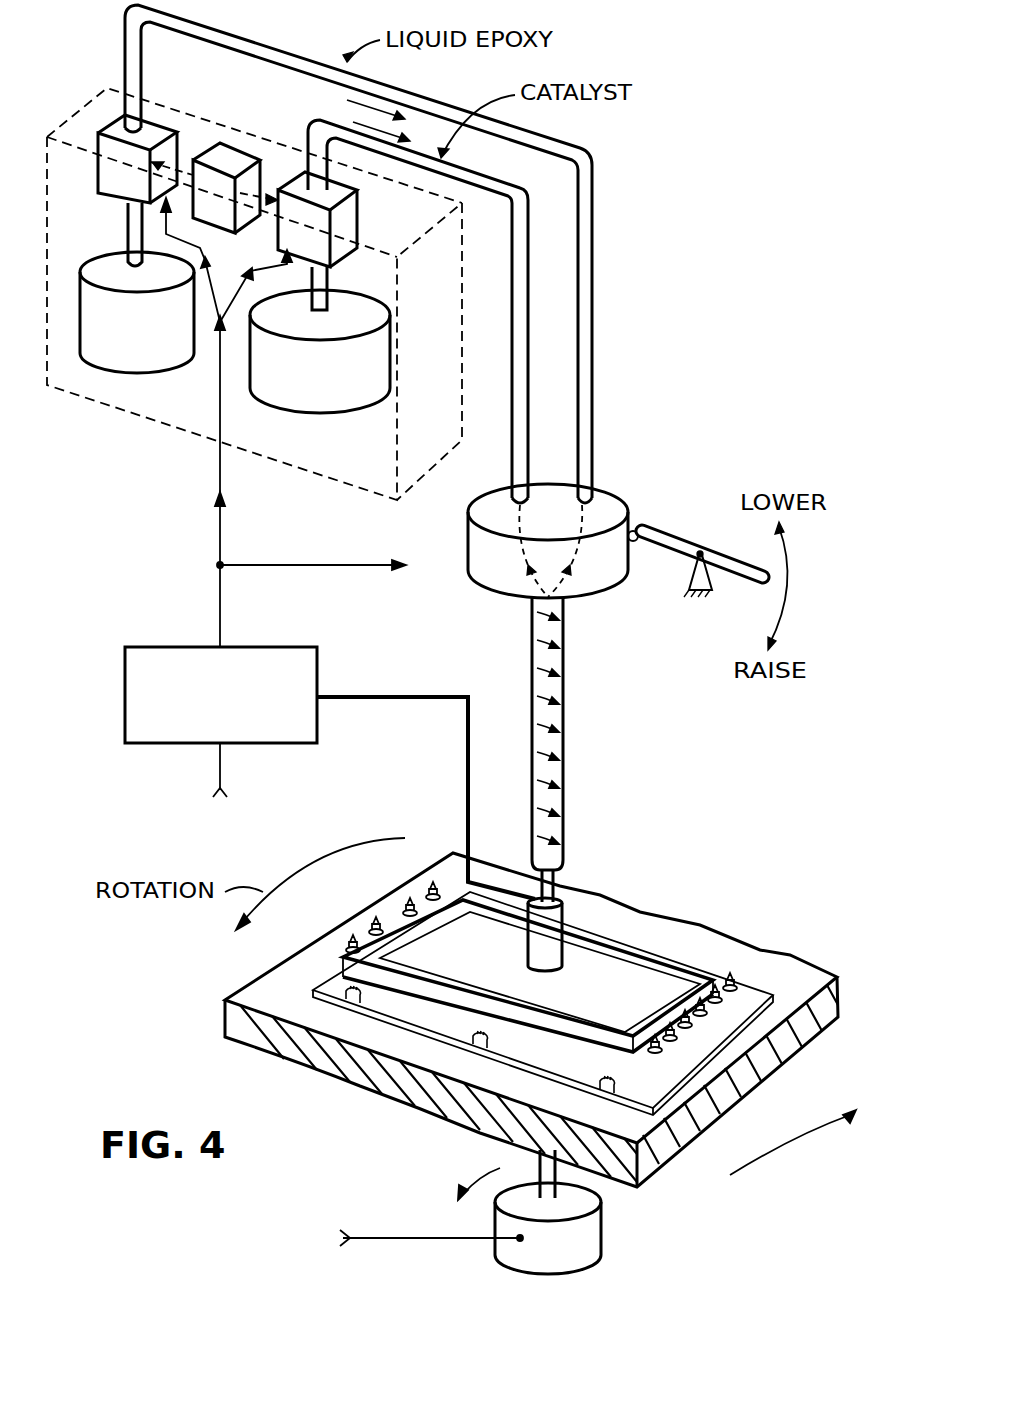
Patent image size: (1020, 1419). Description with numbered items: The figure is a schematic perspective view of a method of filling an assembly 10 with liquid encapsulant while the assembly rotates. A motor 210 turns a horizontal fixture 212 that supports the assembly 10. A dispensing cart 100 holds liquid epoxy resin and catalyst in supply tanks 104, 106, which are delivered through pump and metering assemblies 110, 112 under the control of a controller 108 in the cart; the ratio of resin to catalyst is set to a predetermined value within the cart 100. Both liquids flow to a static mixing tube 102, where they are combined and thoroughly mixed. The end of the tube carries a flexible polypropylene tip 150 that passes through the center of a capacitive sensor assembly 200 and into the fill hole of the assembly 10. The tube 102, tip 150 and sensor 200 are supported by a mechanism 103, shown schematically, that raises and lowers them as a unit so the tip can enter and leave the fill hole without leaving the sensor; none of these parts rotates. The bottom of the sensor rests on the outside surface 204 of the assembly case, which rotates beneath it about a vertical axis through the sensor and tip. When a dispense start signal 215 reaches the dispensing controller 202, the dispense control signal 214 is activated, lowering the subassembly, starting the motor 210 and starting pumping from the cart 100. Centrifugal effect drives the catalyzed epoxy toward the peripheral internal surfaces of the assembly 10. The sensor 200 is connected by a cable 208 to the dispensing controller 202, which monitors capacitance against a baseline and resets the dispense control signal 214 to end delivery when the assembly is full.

The assembly 10 is at (648, 980).
The dispensing cart 100 is at (128, 414).
The static mixing tube 102 is at (565, 780).
The mechanism 103 is at (685, 492).
The supply tank 104 is at (150, 372).
The supply tank 106 is at (320, 412).
The controller 108 is at (228, 160).
The pump and metering assembly 110 is at (118, 190).
The pump and metering assembly 112 is at (345, 222).
The flexible polypropylene tip 150 is at (560, 880).
The capacitive sensor assembly 200 is at (565, 925).
The dispensing controller 202 is at (318, 676).
The outside surface 204 is at (543, 1003).
The cable 208 is at (467, 782).
The motor 210 is at (605, 1230).
The horizontal fixture 212 is at (775, 965).
The dispense control signal 214 is at (410, 1238).
The dispense start signal 215 is at (220, 768).